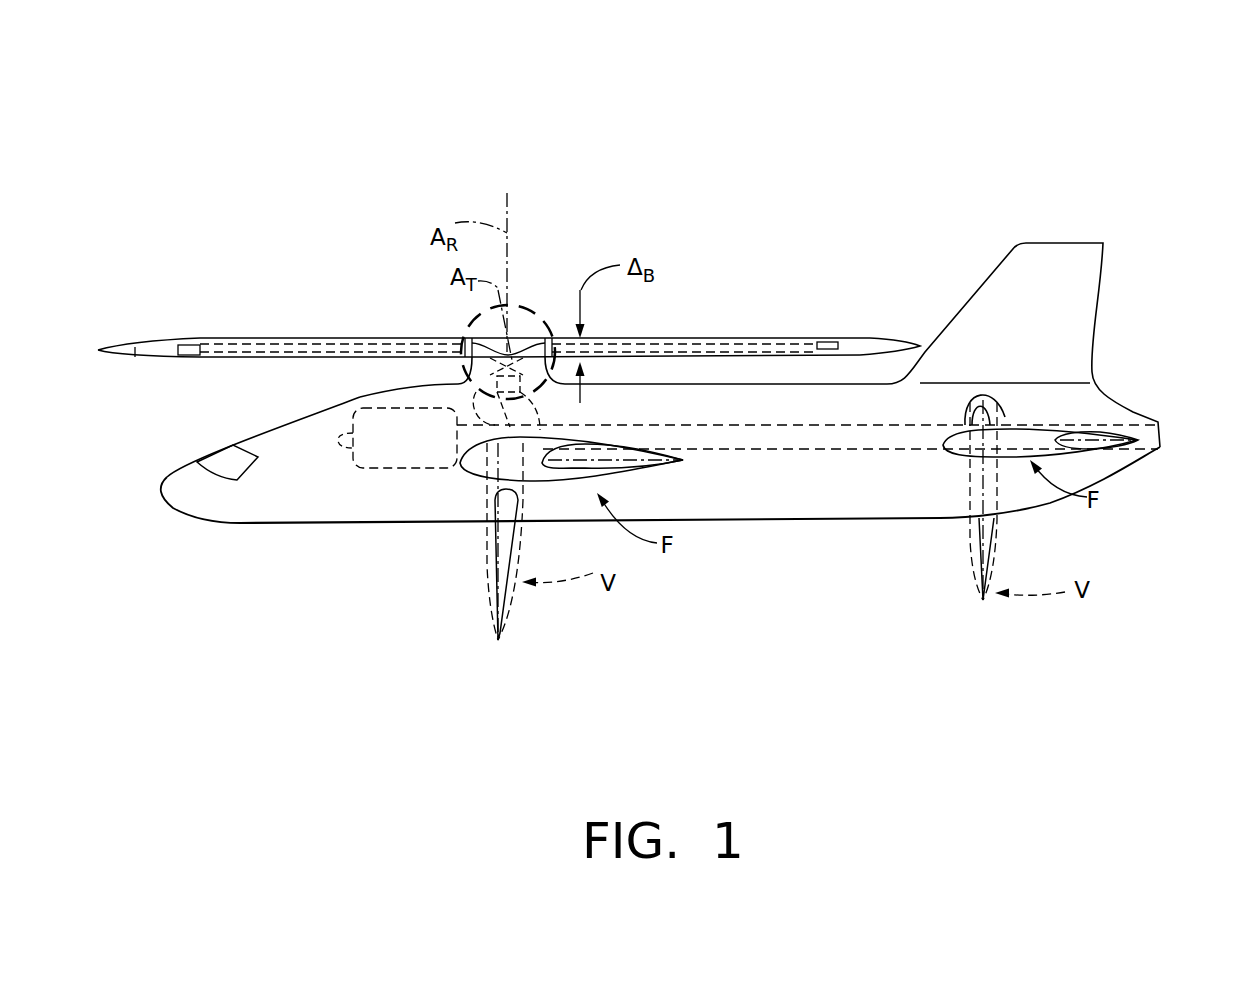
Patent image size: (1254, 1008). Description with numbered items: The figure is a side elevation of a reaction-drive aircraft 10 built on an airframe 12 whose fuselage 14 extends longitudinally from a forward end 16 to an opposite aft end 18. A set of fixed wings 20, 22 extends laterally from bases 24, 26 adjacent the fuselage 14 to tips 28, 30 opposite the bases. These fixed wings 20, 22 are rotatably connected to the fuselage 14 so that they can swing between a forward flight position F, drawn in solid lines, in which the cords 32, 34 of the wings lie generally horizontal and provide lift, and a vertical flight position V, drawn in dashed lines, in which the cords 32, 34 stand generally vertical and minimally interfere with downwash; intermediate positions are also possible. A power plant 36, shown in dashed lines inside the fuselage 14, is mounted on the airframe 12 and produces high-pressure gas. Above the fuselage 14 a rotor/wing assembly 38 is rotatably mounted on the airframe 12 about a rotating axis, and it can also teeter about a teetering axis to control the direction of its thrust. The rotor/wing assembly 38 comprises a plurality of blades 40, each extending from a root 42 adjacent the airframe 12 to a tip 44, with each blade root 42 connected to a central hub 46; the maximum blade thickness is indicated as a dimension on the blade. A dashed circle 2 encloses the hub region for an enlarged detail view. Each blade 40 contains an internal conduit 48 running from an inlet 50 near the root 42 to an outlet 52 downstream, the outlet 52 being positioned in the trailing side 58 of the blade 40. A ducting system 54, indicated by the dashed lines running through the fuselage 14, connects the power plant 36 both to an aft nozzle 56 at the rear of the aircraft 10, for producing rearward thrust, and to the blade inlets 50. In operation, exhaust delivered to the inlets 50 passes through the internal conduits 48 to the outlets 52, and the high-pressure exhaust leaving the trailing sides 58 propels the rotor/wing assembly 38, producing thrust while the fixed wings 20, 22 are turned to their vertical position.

The section view indicator 2 is at (470, 323).
The aircraft 10 is at (925, 115).
The airframe 12 is at (722, 625).
The fuselage 14 is at (823, 520).
The forward end 16 is at (157, 491).
The aft end 18 is at (1117, 467).
The fixed wing 20 is at (470, 478).
The fixed wing 22 is at (968, 393).
The base 24 is at (460, 470).
The base 26 is at (943, 453).
The tip 28 is at (562, 425).
The tip 30 is at (1033, 427).
The cord 32 is at (521, 562).
The cord 34 is at (980, 546).
The power plant 36 is at (365, 470).
The rotor/wing assembly 38 is at (400, 314).
The blade 40 is at (678, 338).
The root 42 is at (538, 347).
The tip 44 is at (923, 343).
The central hub 46 is at (517, 337).
The internal conduit 48 is at (338, 356).
The inlet 50 is at (465, 377).
The outlet 52 is at (170, 358).
The ducting system 54 is at (493, 425).
The aft nozzle 56 is at (1153, 415).
The trailing side 58 is at (135, 360).